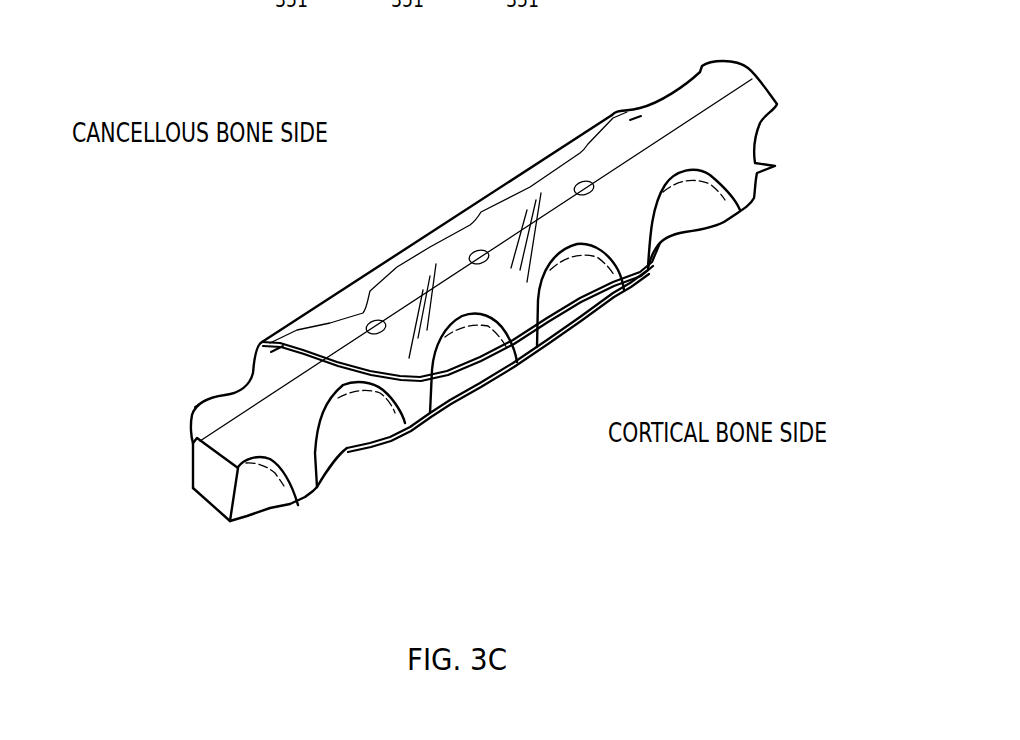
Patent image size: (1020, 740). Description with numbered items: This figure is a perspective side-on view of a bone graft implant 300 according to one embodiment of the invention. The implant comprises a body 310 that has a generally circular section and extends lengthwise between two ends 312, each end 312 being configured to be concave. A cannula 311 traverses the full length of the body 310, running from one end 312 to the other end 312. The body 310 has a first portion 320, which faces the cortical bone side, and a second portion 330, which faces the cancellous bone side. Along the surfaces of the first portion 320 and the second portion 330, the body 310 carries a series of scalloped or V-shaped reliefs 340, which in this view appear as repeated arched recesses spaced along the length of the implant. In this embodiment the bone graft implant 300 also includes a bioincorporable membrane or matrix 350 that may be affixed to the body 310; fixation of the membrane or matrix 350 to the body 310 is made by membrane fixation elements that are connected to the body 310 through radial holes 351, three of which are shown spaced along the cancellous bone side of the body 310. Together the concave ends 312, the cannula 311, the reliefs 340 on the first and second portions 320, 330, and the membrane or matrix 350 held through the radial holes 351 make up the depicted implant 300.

The bone graft implant 300 is at (819, 50).
The body 310 is at (243, 513).
The cannula 311 is at (233, 470).
The end 312 is at (777, 104).
The first portion 320 is at (312, 492).
The second portion 330 is at (190, 460).
The scalloped or V-shaped reliefs 340 is at (237, 385).
The bioincorporable membrane or matrix 350 is at (574, 329).
The radial holes 351 is at (370, 322).